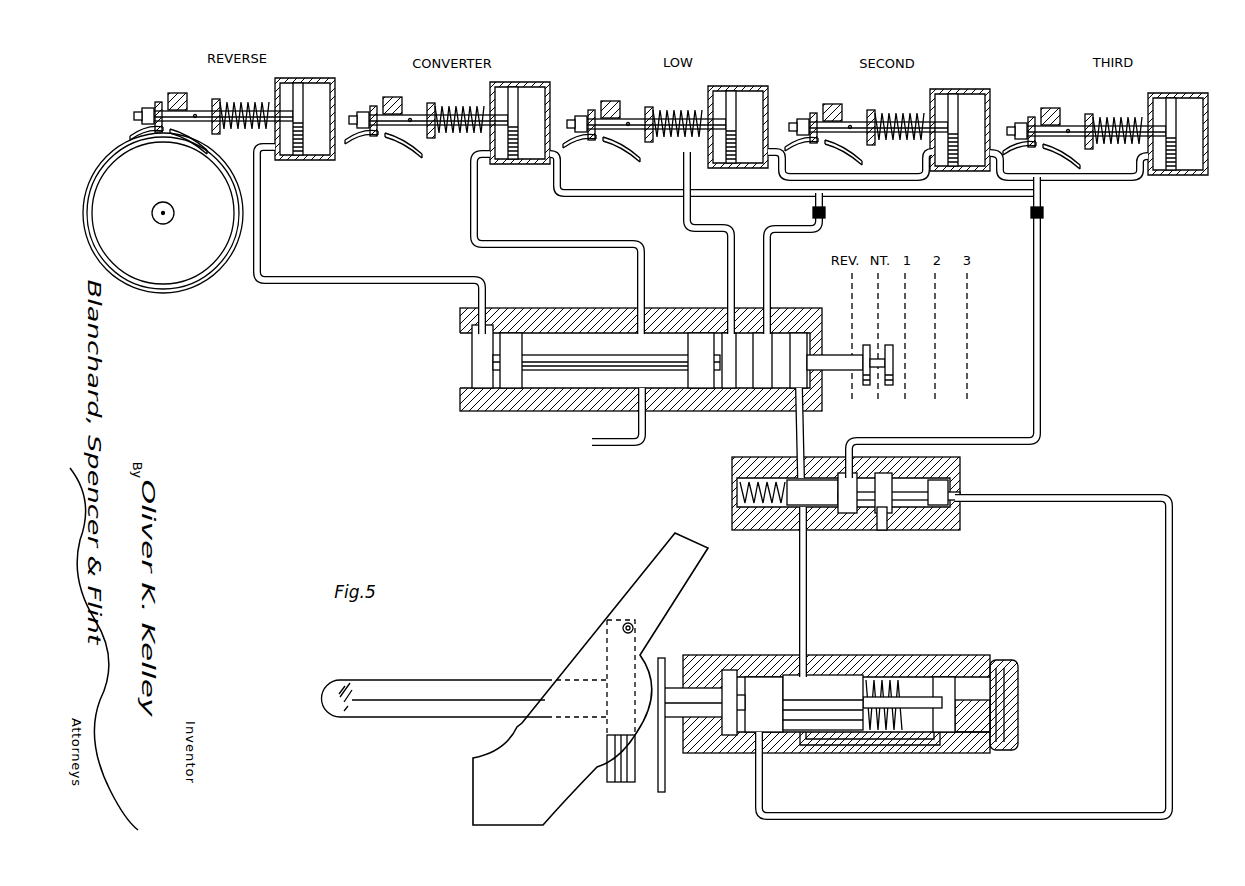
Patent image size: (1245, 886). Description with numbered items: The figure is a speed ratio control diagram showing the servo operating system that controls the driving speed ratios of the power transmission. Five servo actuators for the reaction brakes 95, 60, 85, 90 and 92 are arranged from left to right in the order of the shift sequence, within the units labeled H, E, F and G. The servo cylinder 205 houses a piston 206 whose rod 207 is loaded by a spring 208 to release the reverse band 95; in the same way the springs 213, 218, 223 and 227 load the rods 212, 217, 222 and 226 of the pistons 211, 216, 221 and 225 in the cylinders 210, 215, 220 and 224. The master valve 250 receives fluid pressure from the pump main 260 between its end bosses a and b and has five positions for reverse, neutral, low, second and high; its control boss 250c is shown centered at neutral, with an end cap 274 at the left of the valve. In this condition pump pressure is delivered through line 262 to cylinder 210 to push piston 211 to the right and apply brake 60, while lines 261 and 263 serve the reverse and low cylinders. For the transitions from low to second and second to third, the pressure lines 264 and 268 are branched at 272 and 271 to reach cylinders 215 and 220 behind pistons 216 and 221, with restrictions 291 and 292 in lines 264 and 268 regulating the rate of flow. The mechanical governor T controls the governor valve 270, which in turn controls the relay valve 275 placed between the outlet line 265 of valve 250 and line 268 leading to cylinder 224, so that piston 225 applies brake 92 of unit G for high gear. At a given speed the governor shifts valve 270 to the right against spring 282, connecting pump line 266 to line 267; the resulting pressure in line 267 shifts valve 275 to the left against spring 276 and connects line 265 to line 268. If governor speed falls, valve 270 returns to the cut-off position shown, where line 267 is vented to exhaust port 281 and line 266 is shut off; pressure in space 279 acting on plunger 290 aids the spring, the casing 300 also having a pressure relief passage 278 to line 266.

The servo cylinder 205 is at (320, 78).
The piston 206 is at (300, 101).
The rod 207 is at (198, 111).
The spring 208 is at (237, 101).
The reverse band 95 is at (192, 135).
The reverse servo H is at (318, 150).
The brake 60 is at (367, 150).
The cylinder 210 is at (535, 82).
The piston 211 is at (515, 105).
The rod 212 is at (415, 115).
The spring 213 is at (456, 105).
The converter servo E is at (530, 152).
The reaction brake 90 is at (617, 150).
The cylinder 215 is at (752, 86).
The piston 216 is at (733, 108).
The rod 217 is at (620, 119).
The spring 218 is at (665, 108).
The low and second servos F is at (942, 160).
The reaction brake 85 is at (838, 150).
The cylinder 220 is at (966, 89).
The piston 221 is at (955, 111).
The rod 222 is at (846, 122).
The spring 223 is at (889, 110).
The brake 92 is at (1030, 144).
The cylinder 224 is at (1190, 93).
The piston 225 is at (1175, 115).
The rod 226 is at (1066, 125).
The spring 227 is at (1108, 113).
The unit G is at (1187, 160).
The master valve 250 is at (656, 359).
The control boss 250c is at (866, 386).
The valve end cap 274 is at (466, 326).
The end boss a is at (511, 390).
The end boss b is at (706, 392).
The pump main 260 is at (650, 430).
The reverse servo conduit 261 is at (325, 279).
The converter servo conduit 262 is at (469, 223).
The low servo conduit 263 is at (725, 298).
The pressure line 264 is at (772, 282).
The line 265 is at (796, 440).
The pump pressure line 266 is at (799, 601).
The line 267 is at (1165, 690).
The pressure line 268 is at (988, 438).
The branch 271 is at (1002, 174).
The branch 272 is at (785, 176).
The restriction 291 is at (828, 212).
The restriction 292 is at (1045, 213).
The relay valve 275 is at (831, 511).
The spring 276 is at (736, 492).
The governor valve 270 is at (821, 680).
The pressure relief passage 278 is at (862, 746).
The space 279 is at (840, 704).
The exhaust port 281 is at (728, 742).
The spring 282 is at (880, 692).
The plunger 290 is at (907, 700).
The valve casing 300 is at (990, 660).
The mechanical governor T is at (583, 802).